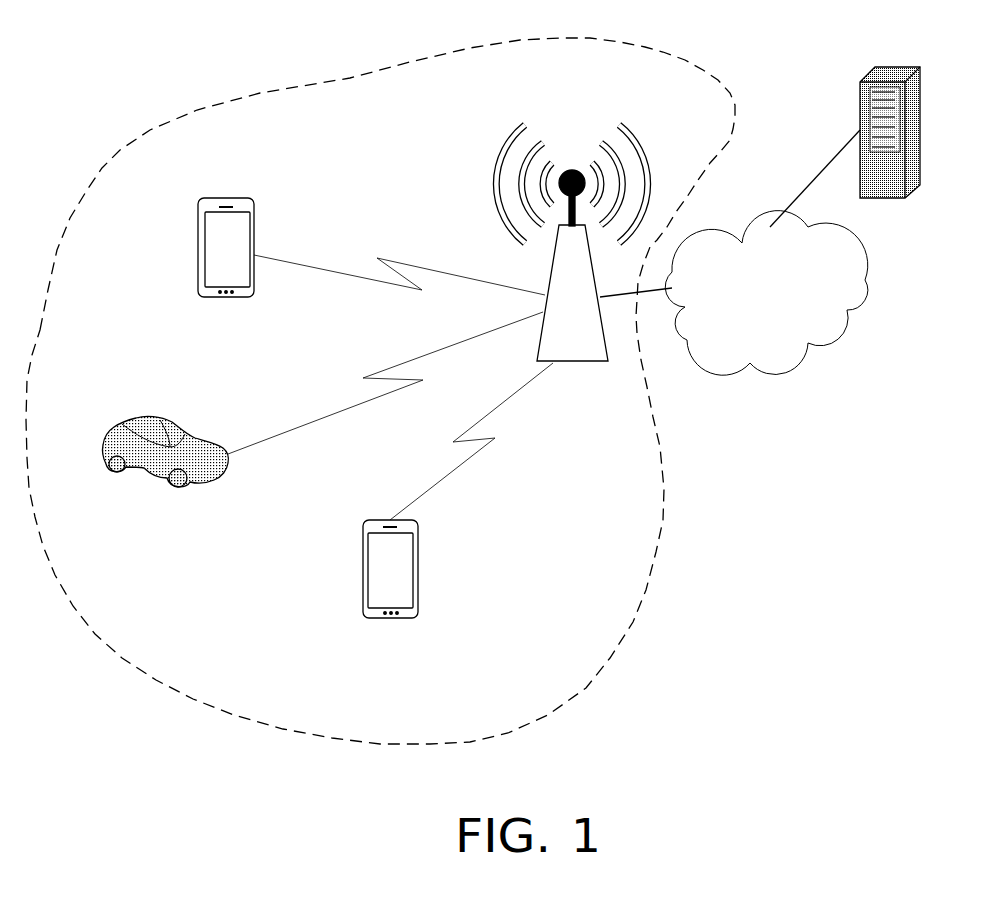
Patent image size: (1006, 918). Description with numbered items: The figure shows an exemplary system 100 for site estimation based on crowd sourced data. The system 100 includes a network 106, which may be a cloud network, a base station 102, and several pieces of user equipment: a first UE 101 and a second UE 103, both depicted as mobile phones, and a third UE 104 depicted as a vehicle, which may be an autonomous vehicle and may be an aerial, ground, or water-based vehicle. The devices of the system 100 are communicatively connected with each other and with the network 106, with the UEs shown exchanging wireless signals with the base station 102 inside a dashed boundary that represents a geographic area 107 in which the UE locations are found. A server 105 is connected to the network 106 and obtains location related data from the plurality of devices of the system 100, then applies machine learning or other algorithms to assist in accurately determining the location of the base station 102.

The system 100 is at (267, 52).
The user equipment 101 is at (388, 520).
The base station 102 is at (571, 260).
The user equipment 103 is at (235, 198).
The user equipment 104 is at (179, 415).
The server 105 is at (889, 73).
The network 106 is at (793, 308).
The geographic area 107 is at (662, 462).